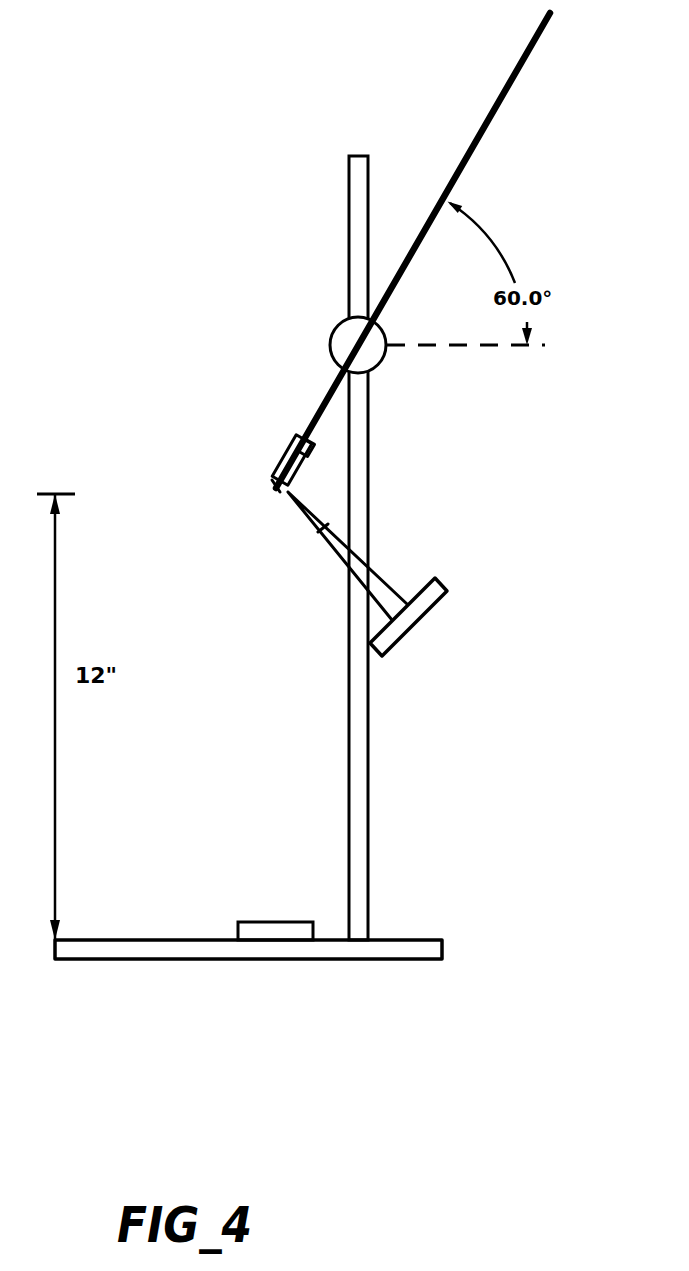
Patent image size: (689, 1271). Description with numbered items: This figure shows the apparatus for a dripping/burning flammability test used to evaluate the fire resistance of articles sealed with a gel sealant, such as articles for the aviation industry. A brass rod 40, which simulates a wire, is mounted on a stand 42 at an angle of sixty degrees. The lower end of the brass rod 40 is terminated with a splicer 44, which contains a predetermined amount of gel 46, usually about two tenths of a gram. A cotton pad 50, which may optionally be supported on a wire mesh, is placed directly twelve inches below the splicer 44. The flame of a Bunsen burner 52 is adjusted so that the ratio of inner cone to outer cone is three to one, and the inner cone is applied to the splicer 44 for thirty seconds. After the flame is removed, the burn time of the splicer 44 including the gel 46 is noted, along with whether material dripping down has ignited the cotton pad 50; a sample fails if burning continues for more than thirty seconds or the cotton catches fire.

The brass rod 40 is at (482, 138).
The stand 42 is at (360, 768).
The splicer 44 is at (268, 485).
The gel 46 is at (285, 448).
The cotton pad 50 is at (262, 930).
The Bunsen burner 52 is at (377, 577).